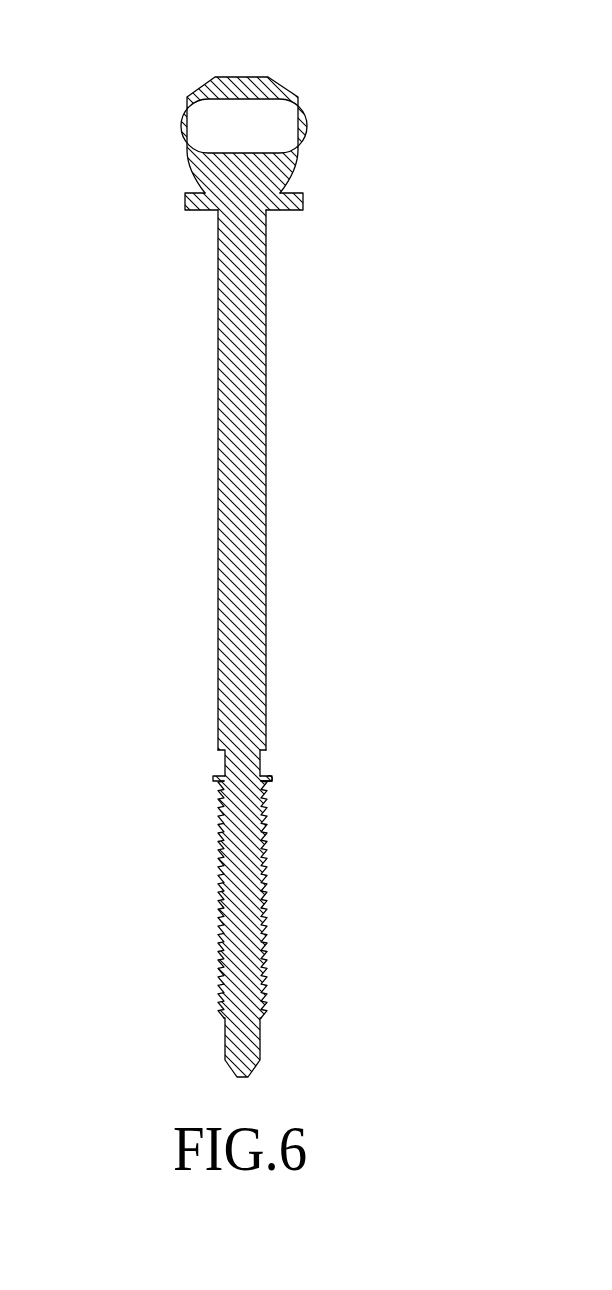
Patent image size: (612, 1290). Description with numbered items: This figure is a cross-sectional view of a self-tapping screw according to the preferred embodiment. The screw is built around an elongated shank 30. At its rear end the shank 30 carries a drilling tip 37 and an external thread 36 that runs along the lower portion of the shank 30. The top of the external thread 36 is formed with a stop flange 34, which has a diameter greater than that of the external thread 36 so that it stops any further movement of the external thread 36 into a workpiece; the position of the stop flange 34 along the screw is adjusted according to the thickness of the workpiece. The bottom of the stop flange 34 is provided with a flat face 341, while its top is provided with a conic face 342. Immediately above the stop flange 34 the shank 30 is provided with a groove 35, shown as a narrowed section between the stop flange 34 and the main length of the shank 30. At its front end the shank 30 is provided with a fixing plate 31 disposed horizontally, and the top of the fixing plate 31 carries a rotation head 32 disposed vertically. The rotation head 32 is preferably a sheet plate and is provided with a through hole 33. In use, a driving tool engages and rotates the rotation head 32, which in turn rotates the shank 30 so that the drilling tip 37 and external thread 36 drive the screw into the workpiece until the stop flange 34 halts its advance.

The shank 30 is at (237, 435).
The fixing plate 31 is at (192, 210).
The rotation head 32 is at (247, 85).
The through hole 33 is at (235, 122).
The stop flange 34 is at (215, 778).
The flat face 341 is at (270, 781).
The conic face 342 is at (268, 777).
The groove 35 is at (225, 765).
The external thread 36 is at (223, 883).
The drilling tip 37 is at (237, 1057).